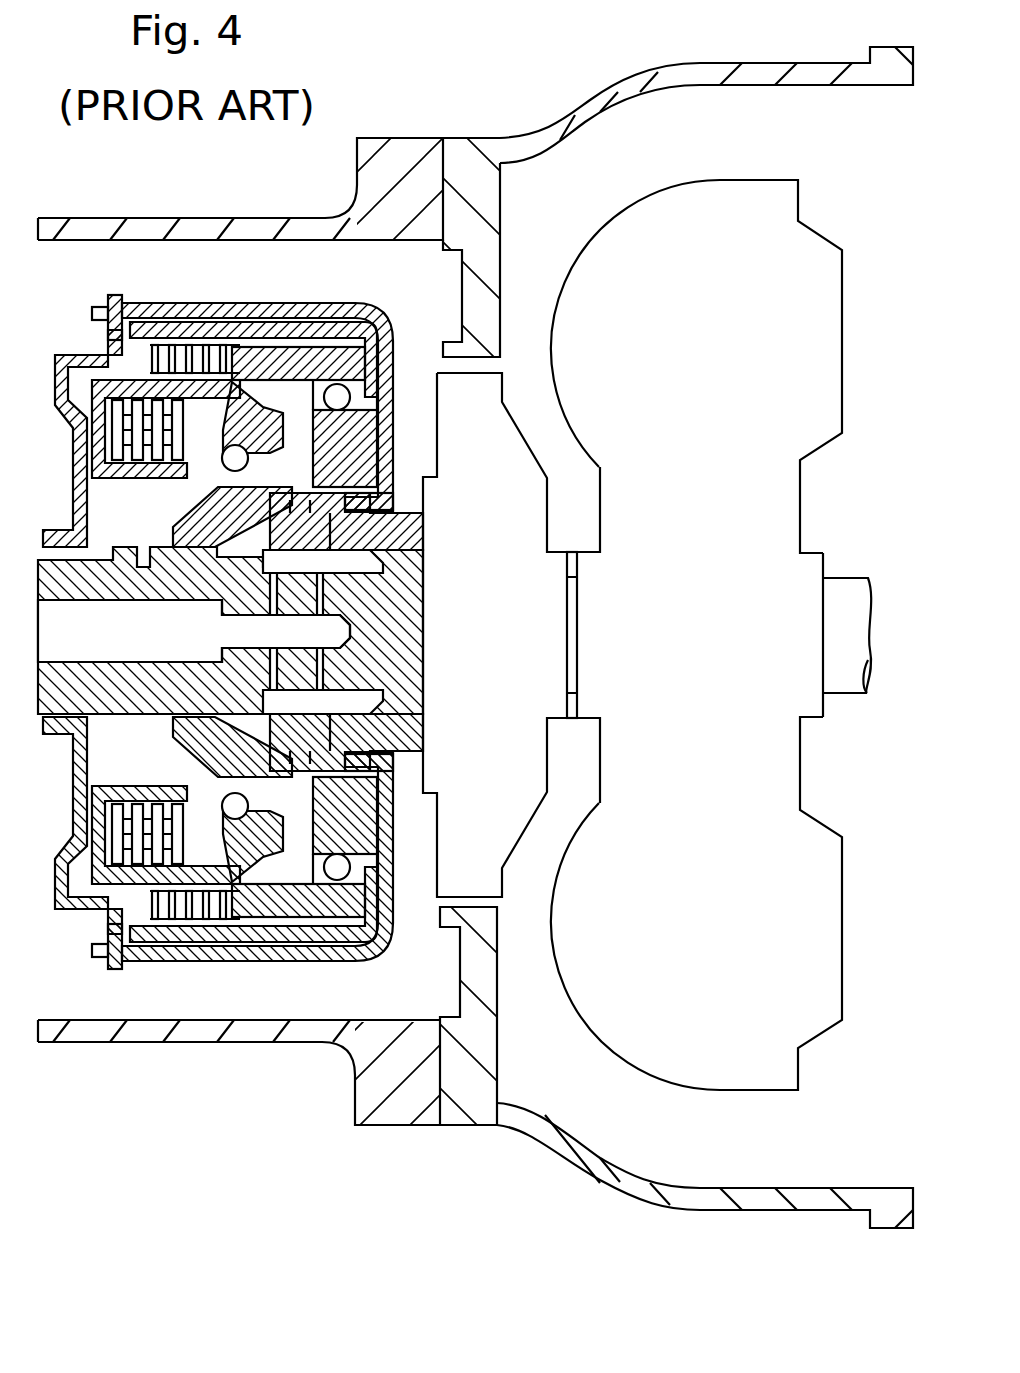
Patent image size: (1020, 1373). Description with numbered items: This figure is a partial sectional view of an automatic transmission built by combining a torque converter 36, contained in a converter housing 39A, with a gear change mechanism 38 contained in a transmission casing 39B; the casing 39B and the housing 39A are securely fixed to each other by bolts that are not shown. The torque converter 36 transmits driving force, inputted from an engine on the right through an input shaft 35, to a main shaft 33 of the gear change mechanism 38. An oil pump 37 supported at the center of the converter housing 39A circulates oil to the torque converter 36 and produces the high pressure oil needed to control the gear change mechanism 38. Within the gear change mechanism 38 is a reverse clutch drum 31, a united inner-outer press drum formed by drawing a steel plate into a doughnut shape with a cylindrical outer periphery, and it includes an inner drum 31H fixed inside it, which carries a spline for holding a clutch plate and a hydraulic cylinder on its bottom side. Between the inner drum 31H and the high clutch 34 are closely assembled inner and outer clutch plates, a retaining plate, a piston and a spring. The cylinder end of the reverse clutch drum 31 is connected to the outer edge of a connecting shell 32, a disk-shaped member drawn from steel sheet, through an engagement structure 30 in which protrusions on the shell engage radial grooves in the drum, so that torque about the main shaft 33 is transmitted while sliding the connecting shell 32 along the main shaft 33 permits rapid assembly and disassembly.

The engagement structure 30 is at (102, 312).
The reverse clutch drum 31 is at (350, 293).
The inner drum 31H is at (290, 337).
The connecting shell 32 is at (56, 348).
The main shaft 33 is at (55, 603).
The high clutch 34 is at (170, 481).
The input shaft 35 is at (845, 587).
The torque converter 36 is at (811, 238).
The oil pump 37 is at (512, 432).
The gear change mechanism 38 is at (240, 693).
The converter housing 39A is at (607, 1187).
The transmission casing 39B is at (330, 1065).